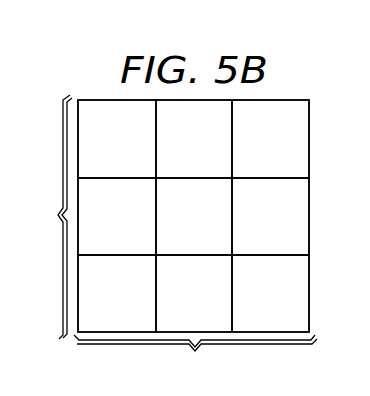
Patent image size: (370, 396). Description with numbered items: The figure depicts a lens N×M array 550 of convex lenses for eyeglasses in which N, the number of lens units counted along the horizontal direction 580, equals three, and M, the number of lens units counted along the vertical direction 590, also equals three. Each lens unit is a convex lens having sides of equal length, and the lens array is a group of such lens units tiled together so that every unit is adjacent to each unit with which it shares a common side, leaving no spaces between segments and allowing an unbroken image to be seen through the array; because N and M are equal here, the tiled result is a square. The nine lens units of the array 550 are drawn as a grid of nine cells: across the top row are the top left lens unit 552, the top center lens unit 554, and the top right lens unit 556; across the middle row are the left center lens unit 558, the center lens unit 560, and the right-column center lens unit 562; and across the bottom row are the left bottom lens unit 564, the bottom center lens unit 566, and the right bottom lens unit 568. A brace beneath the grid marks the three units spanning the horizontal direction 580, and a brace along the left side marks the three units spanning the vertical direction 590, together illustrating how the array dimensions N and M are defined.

The lens N×M array 550 is at (298, 76).
The top left lens unit 552 is at (136, 150).
The top center lens unit 554 is at (212, 150).
The top right lens unit 556 is at (288, 150).
The left center lens unit 558 is at (136, 226).
The center lens unit 560 is at (212, 226).
The right center lens unit 562 is at (288, 226).
The left bottom lens unit 564 is at (136, 304).
The bottom center lens unit 566 is at (212, 304).
The right bottom lens unit 568 is at (288, 304).
The horizontal direction 580 is at (195, 359).
The vertical direction 590 is at (47, 217).